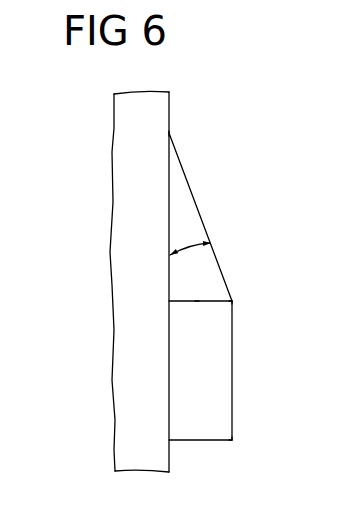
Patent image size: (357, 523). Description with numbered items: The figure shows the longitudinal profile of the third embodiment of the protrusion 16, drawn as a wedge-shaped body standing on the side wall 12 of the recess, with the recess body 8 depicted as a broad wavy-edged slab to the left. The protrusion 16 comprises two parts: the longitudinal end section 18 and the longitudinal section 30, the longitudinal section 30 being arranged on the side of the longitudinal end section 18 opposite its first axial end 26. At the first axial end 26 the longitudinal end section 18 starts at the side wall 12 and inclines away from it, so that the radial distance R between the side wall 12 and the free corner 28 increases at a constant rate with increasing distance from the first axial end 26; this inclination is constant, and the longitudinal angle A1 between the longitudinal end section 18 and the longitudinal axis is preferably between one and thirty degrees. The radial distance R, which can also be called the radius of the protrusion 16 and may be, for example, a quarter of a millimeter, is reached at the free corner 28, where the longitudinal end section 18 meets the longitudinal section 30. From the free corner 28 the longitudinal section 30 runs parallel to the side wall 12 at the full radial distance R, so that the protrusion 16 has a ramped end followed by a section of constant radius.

The workpiece / slab 8 is at (118, 150).
The side wall 12 is at (173, 458).
The protrusion 16 is at (245, 308).
The longitudinal end section 18 is at (199, 208).
The first axial end 26 is at (170, 133).
The free corner 28 is at (234, 301).
The longitudinal section 30 is at (218, 393).
The longitudinal angle A1 is at (192, 264).
The radial distance R is at (197, 303).